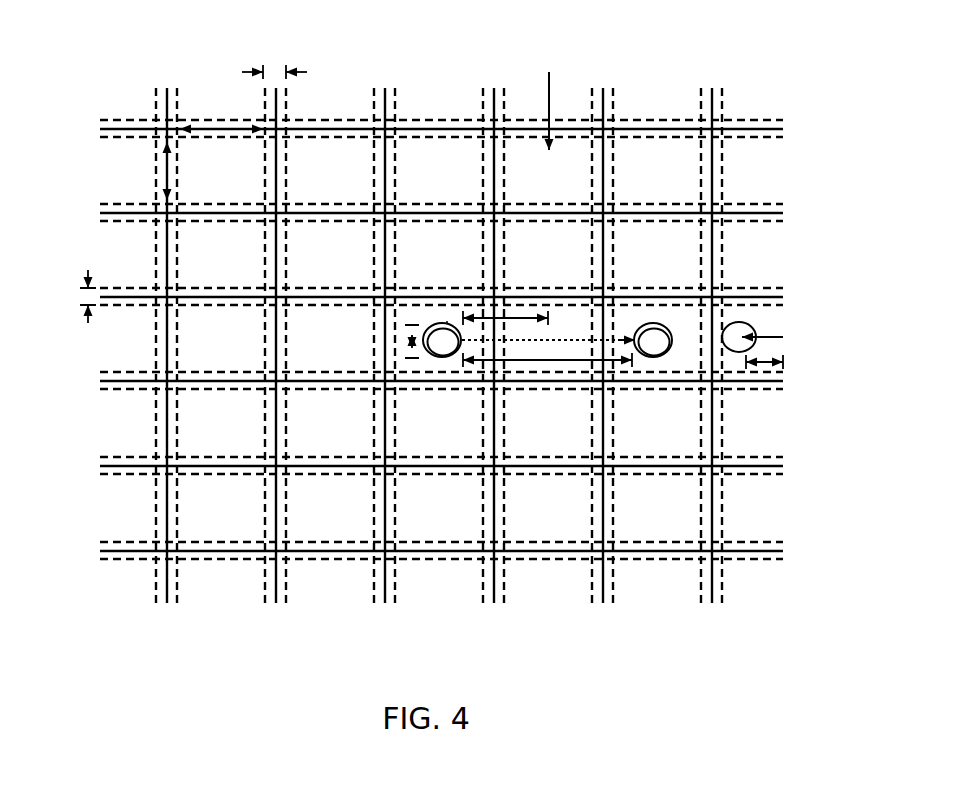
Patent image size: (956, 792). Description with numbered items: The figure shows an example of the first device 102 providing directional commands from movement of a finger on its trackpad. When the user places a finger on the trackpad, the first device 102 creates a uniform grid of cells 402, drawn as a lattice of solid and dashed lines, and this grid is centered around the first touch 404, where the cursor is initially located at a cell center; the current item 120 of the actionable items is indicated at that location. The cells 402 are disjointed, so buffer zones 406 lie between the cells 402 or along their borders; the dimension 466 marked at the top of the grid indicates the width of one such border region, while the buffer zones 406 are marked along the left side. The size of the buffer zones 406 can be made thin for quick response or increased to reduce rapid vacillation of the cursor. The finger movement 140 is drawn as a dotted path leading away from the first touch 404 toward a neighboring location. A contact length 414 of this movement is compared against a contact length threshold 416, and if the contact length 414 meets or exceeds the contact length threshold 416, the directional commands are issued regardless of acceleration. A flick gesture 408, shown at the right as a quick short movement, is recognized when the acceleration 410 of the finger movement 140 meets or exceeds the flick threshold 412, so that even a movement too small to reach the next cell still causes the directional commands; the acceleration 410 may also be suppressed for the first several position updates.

The first device 102 is at (180, 47).
The cells 402 is at (670, 245).
The electrode line width 466 is at (274, 57).
The buffer zones 406 is at (63, 296).
The current item 120 is at (433, 322).
The first touch 404 is at (447, 320).
The contact length threshold 416 is at (520, 317).
The contact length 414 is at (577, 363).
The finger movement 140 is at (417, 343).
The flick gesture 408 is at (752, 313).
The acceleration 410 is at (773, 337).
The flick threshold 412 is at (763, 363).